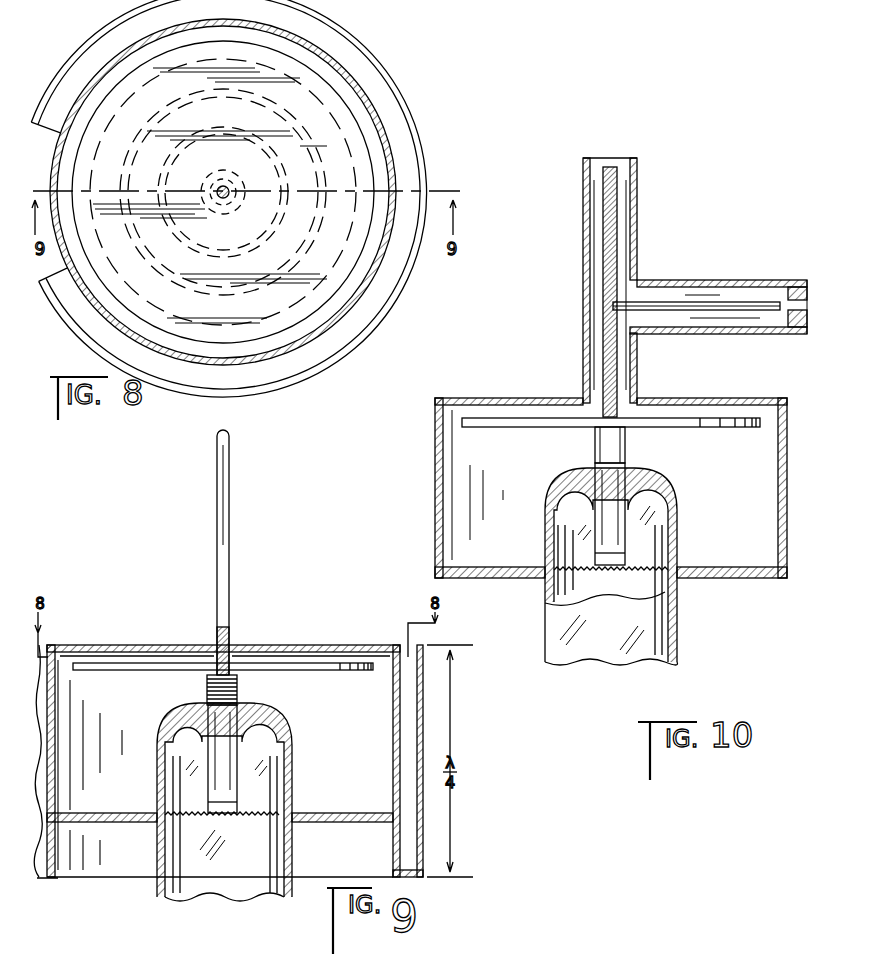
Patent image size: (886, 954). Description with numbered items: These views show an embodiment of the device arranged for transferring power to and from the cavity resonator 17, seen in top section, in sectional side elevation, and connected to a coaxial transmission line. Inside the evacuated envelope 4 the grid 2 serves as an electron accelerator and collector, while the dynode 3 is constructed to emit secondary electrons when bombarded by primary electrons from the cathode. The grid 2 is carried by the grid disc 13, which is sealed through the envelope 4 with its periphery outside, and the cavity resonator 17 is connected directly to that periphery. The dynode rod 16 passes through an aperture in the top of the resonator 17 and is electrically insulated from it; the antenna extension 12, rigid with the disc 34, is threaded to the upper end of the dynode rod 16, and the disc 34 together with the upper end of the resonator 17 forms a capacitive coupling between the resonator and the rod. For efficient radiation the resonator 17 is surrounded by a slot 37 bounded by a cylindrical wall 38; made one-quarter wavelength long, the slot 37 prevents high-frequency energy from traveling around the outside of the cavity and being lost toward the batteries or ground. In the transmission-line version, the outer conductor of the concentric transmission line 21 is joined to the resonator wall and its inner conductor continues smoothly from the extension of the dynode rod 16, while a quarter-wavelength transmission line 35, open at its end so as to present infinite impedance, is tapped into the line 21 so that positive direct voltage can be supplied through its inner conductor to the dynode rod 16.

In FIG. 9, the grid 2 is at (215, 827).
In FIG. 10, the grid 2 is at (600, 575).
In FIG. 9, the dynode 3 is at (208, 802).
In FIG. 10, the dynode 3 is at (596, 556).
In FIG. 8, the evacuated envelope 4 is at (277, 157).
In FIG. 9, the evacuated envelope 4 is at (293, 781).
In FIG. 10, the evacuated envelope 4 is at (678, 547).
In FIG. 9, the antenna extension 12 is at (231, 505).
In FIG. 8, the grid disc 13 is at (327, 202).
In FIG. 9, the grid disc 13 is at (313, 823).
In FIG. 8, the dynode rod 16 is at (227, 182).
In FIG. 9, the dynode rod 16 is at (237, 792).
In FIG. 10, the dynode rod 16 is at (626, 540).
In FIG. 8, the cavity resonator 17 is at (368, 98).
In FIG. 9, the cavity resonator 17 is at (294, 645).
In FIG. 10, the cavity resonator 17 is at (785, 512).
In FIG. 10, the concentric transmission line 21 is at (583, 297).
In FIG. 8, the disc 34 is at (357, 137).
In FIG. 9, the disc 34 is at (341, 670).
In FIG. 10, the disc 34 is at (733, 428).
In FIG. 10, the transmission line 35 is at (735, 333).
In FIG. 8, the slot 37 is at (353, 322).
In FIG. 9, the slot 37 is at (407, 708).
In FIG. 8, the cylindrical wall 38 is at (390, 302).
In FIG. 9, the cylindrical wall 38 is at (417, 760).